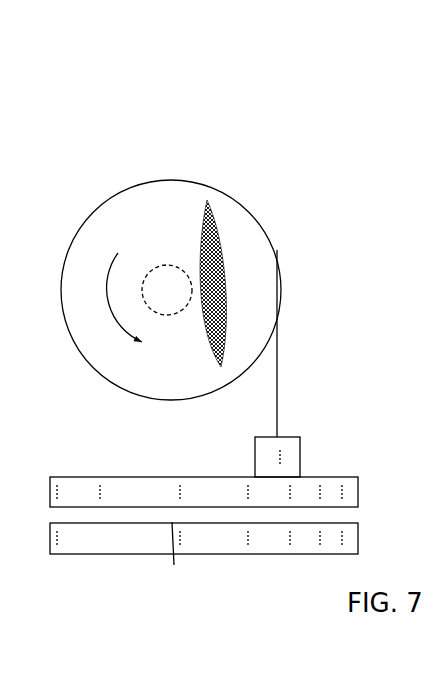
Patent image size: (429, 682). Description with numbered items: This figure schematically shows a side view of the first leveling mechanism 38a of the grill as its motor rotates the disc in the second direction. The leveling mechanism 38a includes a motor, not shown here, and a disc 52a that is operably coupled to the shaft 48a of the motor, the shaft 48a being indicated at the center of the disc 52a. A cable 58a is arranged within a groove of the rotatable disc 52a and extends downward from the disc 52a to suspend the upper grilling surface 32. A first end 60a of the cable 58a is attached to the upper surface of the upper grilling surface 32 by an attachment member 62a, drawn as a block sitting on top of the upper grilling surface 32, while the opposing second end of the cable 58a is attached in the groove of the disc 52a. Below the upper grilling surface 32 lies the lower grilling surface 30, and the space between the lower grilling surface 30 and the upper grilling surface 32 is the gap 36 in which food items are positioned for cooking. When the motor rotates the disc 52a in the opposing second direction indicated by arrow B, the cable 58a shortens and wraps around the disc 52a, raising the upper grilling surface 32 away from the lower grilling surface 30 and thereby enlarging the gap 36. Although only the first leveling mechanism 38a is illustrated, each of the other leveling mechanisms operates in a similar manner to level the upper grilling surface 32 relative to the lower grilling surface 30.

The leveling mechanism 38a is at (252, 156).
The disc 52a is at (253, 267).
The shaft 48a is at (167, 268).
The cable 58a is at (277, 373).
The first end 60a is at (278, 435).
The attachment member 62a is at (300, 459).
The upper grilling surface 32 is at (346, 497).
The lower grilling surface 30 is at (346, 542).
The gap 36 is at (174, 565).